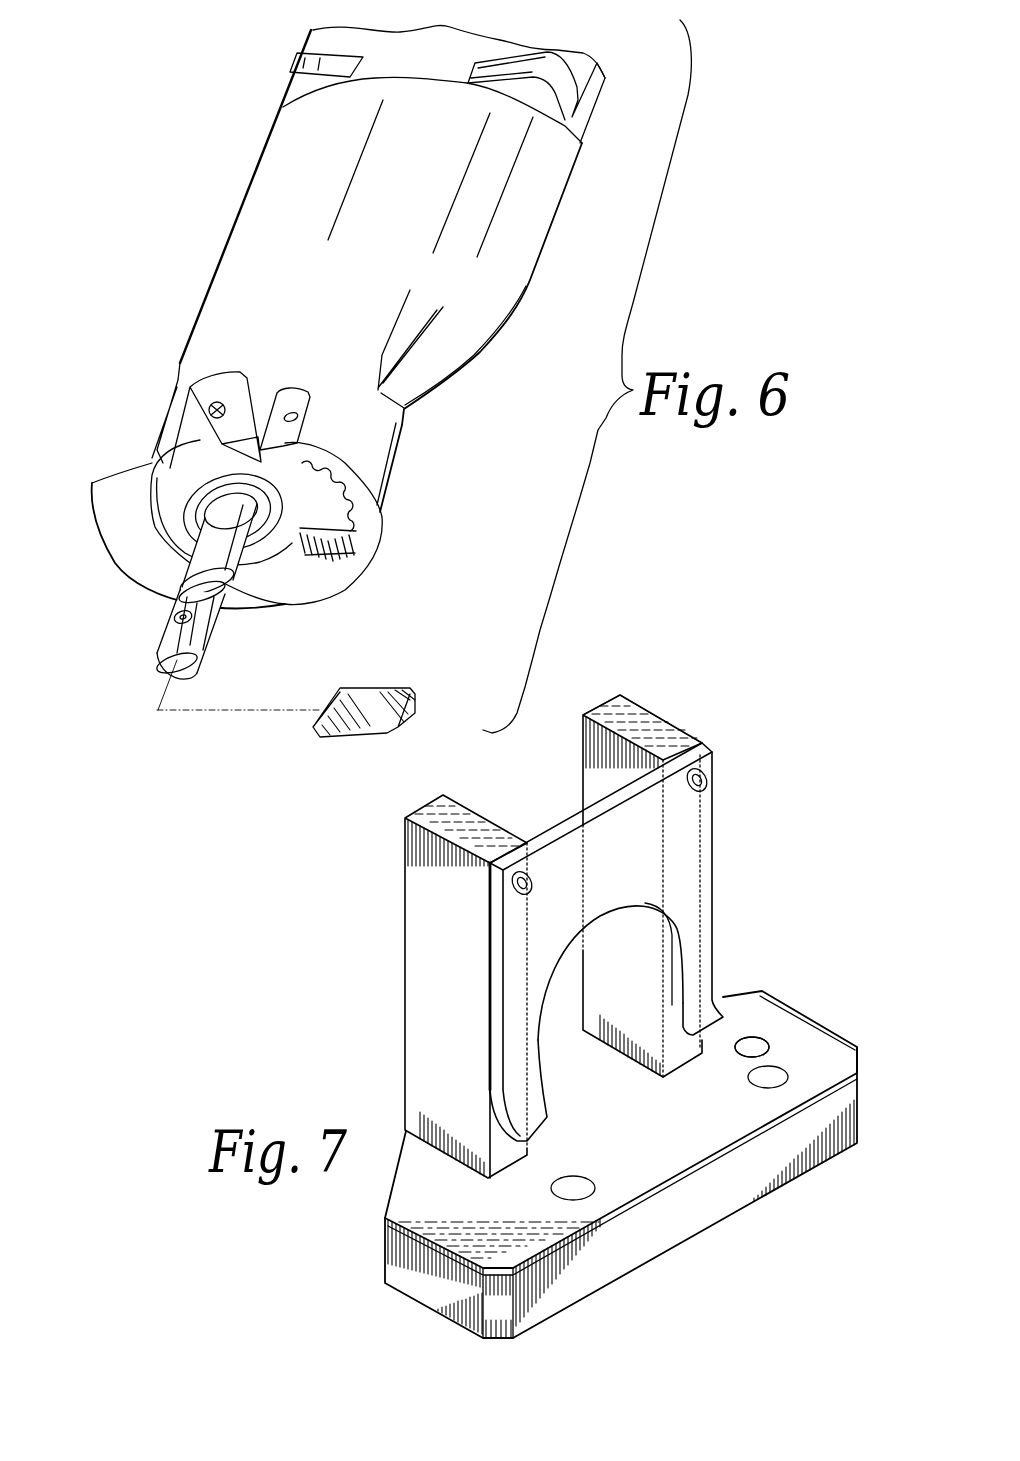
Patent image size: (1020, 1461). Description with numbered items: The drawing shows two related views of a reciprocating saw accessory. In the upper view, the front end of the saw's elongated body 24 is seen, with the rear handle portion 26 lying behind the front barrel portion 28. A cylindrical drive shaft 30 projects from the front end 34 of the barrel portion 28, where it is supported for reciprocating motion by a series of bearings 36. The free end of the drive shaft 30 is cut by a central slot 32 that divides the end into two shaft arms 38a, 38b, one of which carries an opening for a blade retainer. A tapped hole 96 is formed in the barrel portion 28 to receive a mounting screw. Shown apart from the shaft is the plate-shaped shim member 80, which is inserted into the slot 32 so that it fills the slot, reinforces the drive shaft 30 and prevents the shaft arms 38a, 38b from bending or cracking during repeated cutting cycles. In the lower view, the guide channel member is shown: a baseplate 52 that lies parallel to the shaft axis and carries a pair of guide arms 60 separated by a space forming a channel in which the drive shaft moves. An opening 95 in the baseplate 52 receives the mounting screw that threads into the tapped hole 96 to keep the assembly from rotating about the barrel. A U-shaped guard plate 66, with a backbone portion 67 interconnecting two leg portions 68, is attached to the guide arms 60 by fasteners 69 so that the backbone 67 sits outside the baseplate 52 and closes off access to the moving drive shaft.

In FIG. 6, the elongated body 24 is at (470, 333).
In FIG. 6, the rear handle portion 26 is at (573, 60).
In FIG. 6, the front barrel portion 28 is at (203, 347).
In FIG. 6, the drive shaft 30 is at (163, 637).
In FIG. 6, the central slot 32 is at (220, 610).
In FIG. 6, the front end 34 is at (92, 484).
In FIG. 6, the bearings 36 is at (183, 515).
In FIG. 6, the shaft arm 38a is at (163, 643).
In FIG. 6, the shaft arm 38b is at (207, 630).
In FIG. 6, the shim member 80 is at (360, 695).
In FIG. 6, the tapped hole 96 is at (290, 415).
In FIG. 7, the baseplate 52 is at (651, 1159).
In FIG. 7, the guide arms 60 is at (466, 975).
In FIG. 7, the guard plate 66 is at (600, 792).
In FIG. 7, the backbone portion 67 is at (633, 828).
In FIG. 7, the leg portions 68 is at (687, 847).
In FIG. 7, the fastener 69 is at (513, 1047).
In FIG. 7, the opening 95 is at (753, 1043).